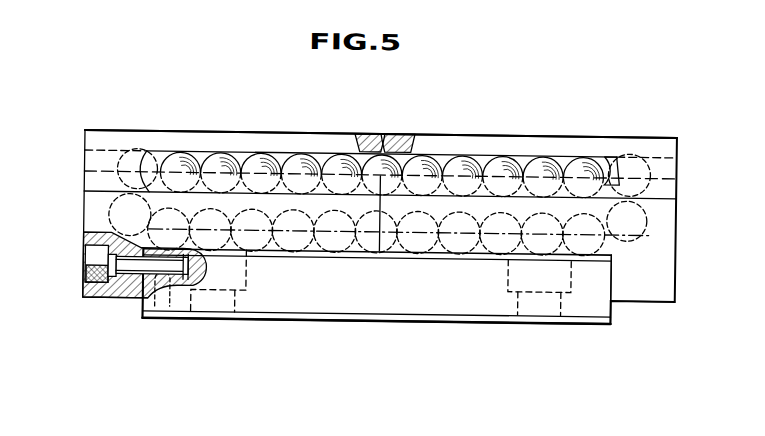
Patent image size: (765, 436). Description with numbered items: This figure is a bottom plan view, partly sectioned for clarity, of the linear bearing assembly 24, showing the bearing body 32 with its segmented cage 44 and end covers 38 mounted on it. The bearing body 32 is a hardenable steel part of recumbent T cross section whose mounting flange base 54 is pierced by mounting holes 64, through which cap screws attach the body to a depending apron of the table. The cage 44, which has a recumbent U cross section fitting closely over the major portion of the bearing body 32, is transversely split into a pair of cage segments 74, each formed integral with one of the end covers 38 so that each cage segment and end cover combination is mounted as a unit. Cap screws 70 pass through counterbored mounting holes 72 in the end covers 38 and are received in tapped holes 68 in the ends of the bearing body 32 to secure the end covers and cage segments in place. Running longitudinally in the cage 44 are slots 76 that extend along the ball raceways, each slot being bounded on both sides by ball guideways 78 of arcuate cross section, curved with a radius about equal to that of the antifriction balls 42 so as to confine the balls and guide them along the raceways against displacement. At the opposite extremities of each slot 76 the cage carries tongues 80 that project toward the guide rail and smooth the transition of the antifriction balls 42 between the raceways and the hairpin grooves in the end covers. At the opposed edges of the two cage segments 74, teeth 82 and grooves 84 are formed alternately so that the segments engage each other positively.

The linear bearing assembly 24 is at (683, 125).
The bearing body 32 is at (356, 300).
The end cover 38 is at (84, 221).
The antifriction ball 42 is at (263, 160).
The segmented cage 44 is at (530, 128).
The mounting flange base 54 is at (420, 300).
The mounting hole 64 is at (256, 282).
The tapped hole 68 is at (172, 285).
The cap screw 70 is at (97, 257).
The counterbored mounting hole 72 is at (123, 299).
The cage segment 74 is at (188, 141).
The slot 76 is at (487, 145).
The ball guideway 78 is at (585, 153).
The tongue 80 is at (140, 149).
The tooth 82 is at (370, 131).
The groove 84 is at (402, 130).